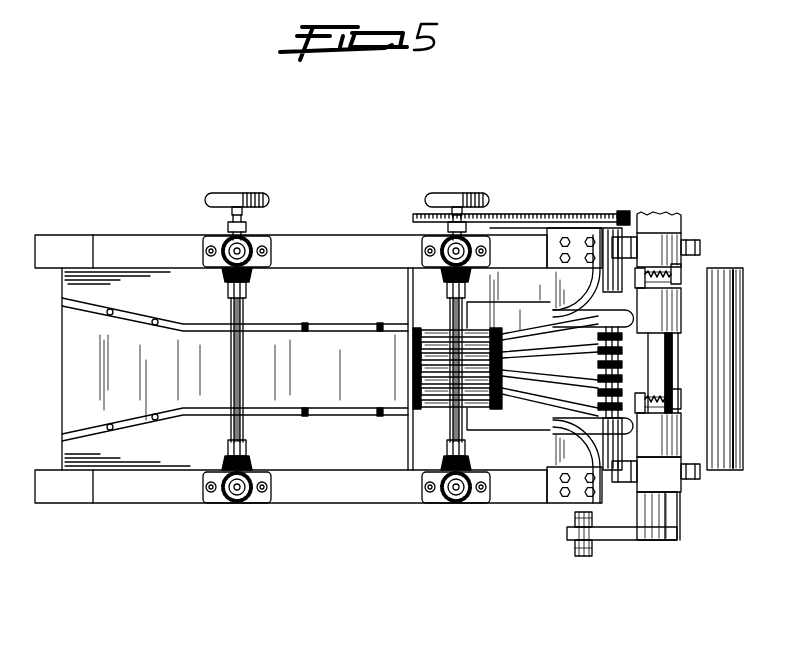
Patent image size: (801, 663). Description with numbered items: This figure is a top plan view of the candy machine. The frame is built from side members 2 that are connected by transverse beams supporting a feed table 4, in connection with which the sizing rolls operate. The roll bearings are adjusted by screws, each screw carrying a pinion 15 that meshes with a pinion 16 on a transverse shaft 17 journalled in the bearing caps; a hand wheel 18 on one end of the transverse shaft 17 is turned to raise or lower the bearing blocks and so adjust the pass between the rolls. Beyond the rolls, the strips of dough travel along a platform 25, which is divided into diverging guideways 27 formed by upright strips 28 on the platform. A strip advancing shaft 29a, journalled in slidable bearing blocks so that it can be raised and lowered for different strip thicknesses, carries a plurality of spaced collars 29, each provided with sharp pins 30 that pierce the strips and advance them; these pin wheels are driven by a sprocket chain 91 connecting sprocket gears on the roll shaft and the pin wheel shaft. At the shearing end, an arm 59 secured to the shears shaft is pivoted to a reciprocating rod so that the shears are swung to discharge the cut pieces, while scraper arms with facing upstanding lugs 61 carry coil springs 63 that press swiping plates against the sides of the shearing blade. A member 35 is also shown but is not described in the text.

The side members 2 is at (300, 249).
The feed table 4 is at (103, 368).
The pinion 15 is at (220, 240).
The pinion 16 is at (222, 270).
The transverse shaft 17 is at (233, 350).
The hand wheel 18 is at (233, 197).
The platform 25 is at (490, 425).
The diverging guideways 27 is at (548, 385).
The upright strips 28 is at (521, 340).
The collars 29 is at (630, 381).
The strip advancing shaft 29a is at (641, 334).
The sharp pins 30 is at (612, 363).
The beam 35 is at (742, 456).
The arm 59 is at (618, 532).
The upstanding lug 61 is at (630, 236).
The coil spring 63 is at (660, 262).
The sprocket chain 91 is at (503, 214).